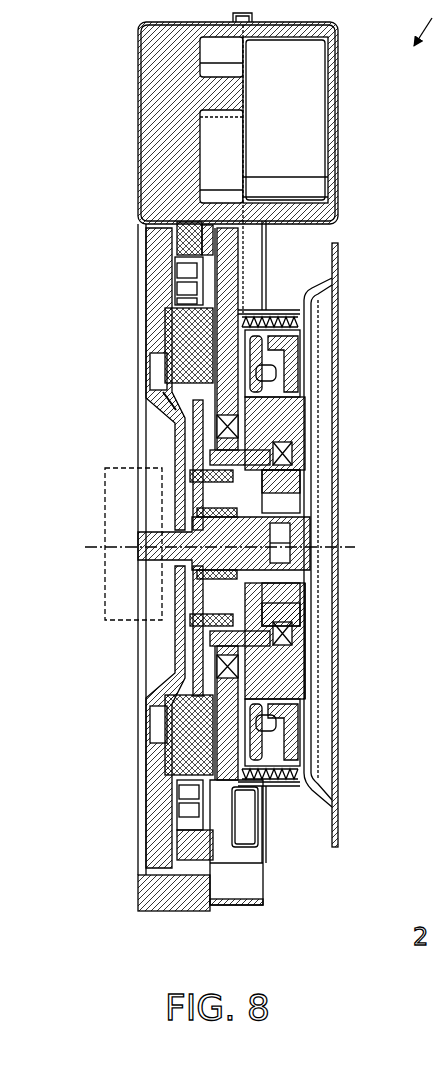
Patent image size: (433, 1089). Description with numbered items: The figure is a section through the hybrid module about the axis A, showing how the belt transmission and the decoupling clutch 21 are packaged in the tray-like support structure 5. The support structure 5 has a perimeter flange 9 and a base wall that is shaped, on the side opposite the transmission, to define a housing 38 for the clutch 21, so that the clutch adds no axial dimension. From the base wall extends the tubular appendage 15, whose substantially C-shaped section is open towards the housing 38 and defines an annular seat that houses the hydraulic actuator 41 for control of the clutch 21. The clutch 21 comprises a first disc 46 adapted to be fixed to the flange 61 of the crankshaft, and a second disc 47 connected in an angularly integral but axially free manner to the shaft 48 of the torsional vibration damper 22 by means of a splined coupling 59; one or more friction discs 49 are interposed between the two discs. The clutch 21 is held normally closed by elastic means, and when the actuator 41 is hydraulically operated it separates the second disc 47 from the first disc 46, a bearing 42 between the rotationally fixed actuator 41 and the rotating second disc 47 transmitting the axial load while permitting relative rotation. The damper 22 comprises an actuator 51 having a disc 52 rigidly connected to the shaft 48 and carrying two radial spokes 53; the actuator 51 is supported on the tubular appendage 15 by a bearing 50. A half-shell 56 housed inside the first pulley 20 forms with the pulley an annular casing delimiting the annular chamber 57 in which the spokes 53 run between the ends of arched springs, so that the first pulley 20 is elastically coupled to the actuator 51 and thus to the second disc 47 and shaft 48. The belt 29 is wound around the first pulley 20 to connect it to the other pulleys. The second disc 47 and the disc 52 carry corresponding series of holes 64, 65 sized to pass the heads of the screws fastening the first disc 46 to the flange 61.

The support structure 5 is at (143, 914).
The perimeter flange 9 is at (198, 905).
The tubular appendage 15 is at (305, 398).
The first pulley 20 is at (255, 312).
The decoupling clutch 21 is at (160, 420).
The torsional vibration damper 22 is at (258, 480).
The belt 29 is at (312, 298).
The housing 38 is at (176, 226).
The hydraulic actuator 41 is at (305, 702).
The bearing 42 is at (160, 395).
The first disc 46 is at (155, 754).
The second disc 47 is at (182, 720).
The shaft 48 is at (300, 520).
The friction discs 49 is at (150, 292).
The bearing 50 is at (295, 455).
The actuator 51 is at (205, 592).
The disc 52 is at (300, 645).
The radial spokes 53 is at (310, 355).
The half-shell 56 is at (247, 757).
The annular chamber 57 is at (165, 355).
The splined coupling 59 is at (265, 498).
The flange 61 is at (105, 605).
The holes 64 is at (246, 590).
The holes 65 is at (295, 595).
The axis A is at (352, 546).